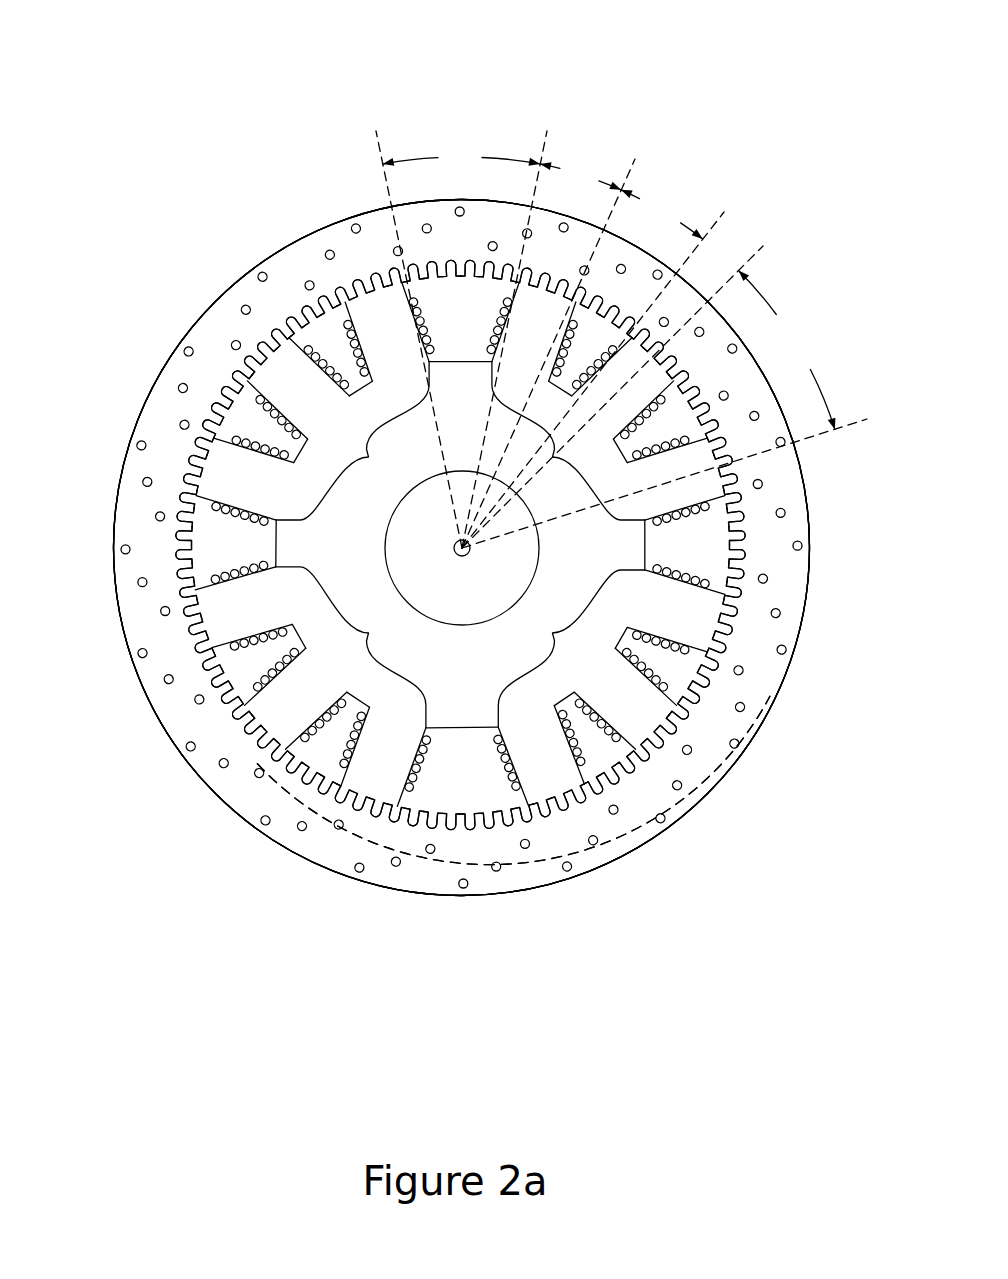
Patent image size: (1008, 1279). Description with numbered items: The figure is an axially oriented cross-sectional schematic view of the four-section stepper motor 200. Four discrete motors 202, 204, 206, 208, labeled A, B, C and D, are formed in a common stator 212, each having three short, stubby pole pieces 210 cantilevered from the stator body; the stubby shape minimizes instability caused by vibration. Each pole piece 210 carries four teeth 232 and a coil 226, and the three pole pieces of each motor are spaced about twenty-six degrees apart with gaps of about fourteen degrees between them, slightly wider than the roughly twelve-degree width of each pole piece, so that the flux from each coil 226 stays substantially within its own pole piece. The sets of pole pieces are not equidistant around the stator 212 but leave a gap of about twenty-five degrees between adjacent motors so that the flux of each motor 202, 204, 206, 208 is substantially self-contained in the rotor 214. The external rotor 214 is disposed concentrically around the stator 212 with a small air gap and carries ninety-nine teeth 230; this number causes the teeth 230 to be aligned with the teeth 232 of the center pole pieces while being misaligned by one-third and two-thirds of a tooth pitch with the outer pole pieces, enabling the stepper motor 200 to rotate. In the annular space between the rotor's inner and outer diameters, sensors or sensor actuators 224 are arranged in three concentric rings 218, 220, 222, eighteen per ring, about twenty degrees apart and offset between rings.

The stepper motor 200 is at (645, 100).
The discrete motor A 202 is at (351, 647).
The discrete motor B 204 is at (352, 441).
The discrete motor C 206 is at (568, 441).
The discrete motor D 208 is at (571, 648).
The pole piece 210 is at (702, 603).
The stator 212 is at (462, 713).
The rotor 214 is at (175, 717).
The concentric ring 218 is at (607, 855).
The concentric ring 220 is at (452, 867).
The concentric ring 222 is at (292, 802).
The sensors or sensor actuators 224 is at (258, 274).
The coil 226 is at (409, 278).
The rotor teeth 230 is at (187, 532).
The pole piece teeth 232 is at (673, 327).